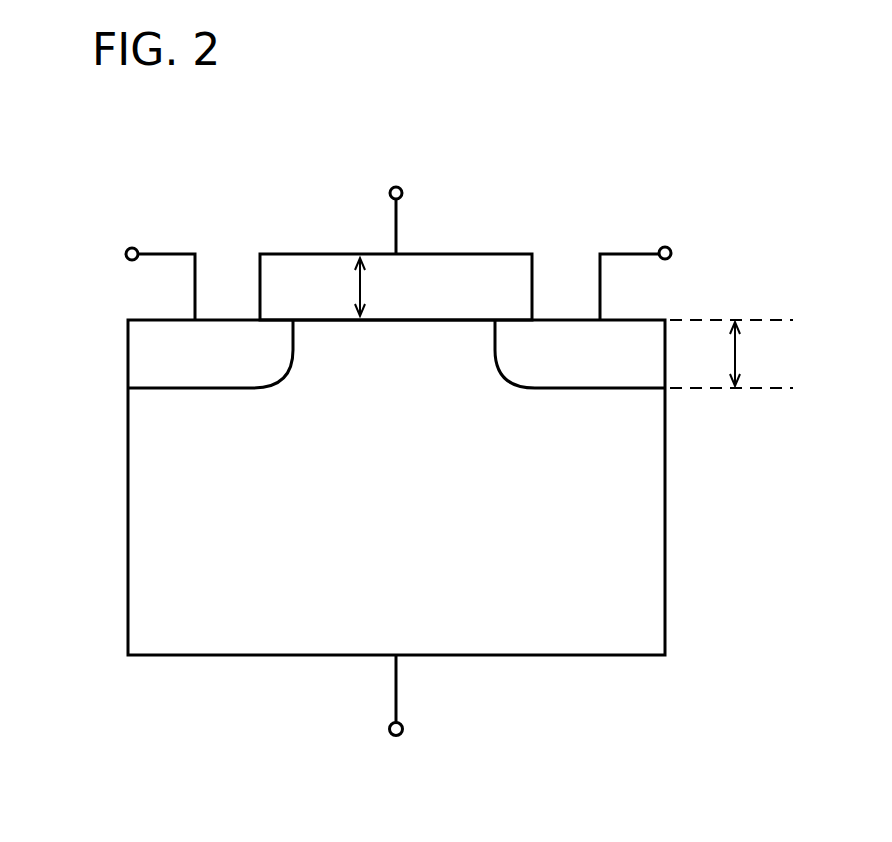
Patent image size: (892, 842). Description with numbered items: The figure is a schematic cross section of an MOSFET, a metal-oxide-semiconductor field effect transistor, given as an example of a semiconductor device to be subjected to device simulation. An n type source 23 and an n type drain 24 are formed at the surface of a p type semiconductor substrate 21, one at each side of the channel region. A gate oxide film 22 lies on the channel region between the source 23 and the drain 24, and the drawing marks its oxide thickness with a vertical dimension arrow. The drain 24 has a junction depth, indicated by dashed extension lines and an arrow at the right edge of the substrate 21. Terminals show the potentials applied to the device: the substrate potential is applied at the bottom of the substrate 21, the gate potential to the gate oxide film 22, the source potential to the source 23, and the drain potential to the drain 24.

The p type semiconductor substrate 21 is at (636, 527).
The gate oxide film 22 is at (478, 268).
The n type source 23 is at (215, 333).
The n type drain 24 is at (575, 333).